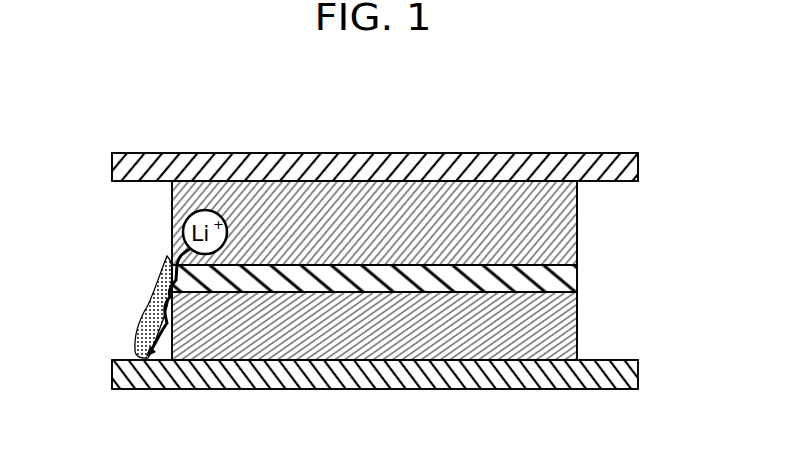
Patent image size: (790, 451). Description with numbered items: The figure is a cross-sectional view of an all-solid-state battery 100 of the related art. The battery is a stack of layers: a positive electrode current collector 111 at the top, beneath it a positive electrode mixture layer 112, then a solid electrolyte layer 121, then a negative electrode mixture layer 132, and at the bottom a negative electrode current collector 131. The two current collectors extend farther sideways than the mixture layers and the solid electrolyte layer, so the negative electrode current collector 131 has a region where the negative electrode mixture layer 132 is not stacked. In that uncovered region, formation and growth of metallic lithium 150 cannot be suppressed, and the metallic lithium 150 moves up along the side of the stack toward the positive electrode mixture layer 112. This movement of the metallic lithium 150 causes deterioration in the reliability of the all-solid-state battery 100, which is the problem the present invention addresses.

The all-solid-state battery 100 is at (147, 120).
The positive electrode current collector 111 is at (622, 172).
The positive electrode mixture layer 112 is at (558, 220).
The solid electrolyte layer 121 is at (560, 275).
The negative electrode mixture layer 132 is at (558, 325).
The negative electrode current collector 131 is at (620, 377).
The metallic lithium 150 is at (135, 325).